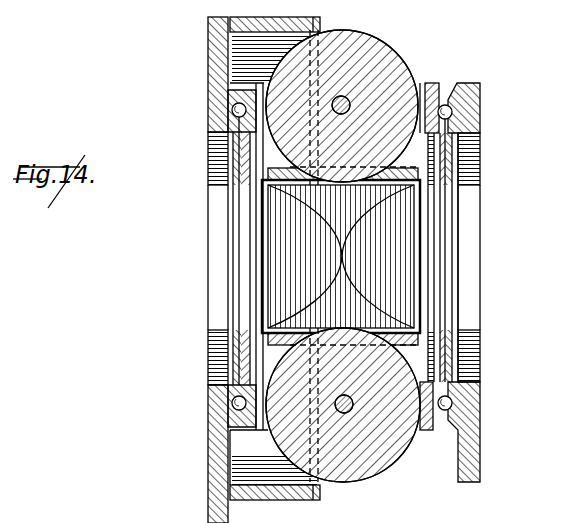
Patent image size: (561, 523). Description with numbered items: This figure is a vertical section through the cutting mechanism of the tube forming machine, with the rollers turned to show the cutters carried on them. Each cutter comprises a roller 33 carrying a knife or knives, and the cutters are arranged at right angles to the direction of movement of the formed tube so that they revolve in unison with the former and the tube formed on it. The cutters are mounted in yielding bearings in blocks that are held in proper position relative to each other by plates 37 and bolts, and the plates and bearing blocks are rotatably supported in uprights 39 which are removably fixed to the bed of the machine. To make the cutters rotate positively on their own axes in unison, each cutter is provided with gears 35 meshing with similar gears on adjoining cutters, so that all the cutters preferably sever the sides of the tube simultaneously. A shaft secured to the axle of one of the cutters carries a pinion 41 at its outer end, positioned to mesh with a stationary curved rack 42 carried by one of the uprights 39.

The roller 33 is at (400, 64).
The gears 35 is at (466, 176).
The plates 37 is at (233, 105).
The uprights 39 is at (208, 120).
The pinion 41 is at (386, 478).
The curved rack 42 is at (320, 498).